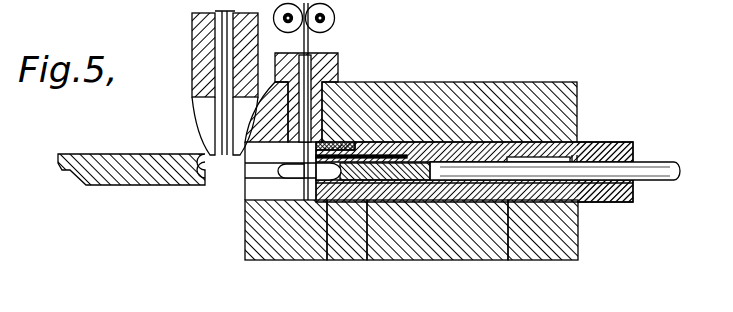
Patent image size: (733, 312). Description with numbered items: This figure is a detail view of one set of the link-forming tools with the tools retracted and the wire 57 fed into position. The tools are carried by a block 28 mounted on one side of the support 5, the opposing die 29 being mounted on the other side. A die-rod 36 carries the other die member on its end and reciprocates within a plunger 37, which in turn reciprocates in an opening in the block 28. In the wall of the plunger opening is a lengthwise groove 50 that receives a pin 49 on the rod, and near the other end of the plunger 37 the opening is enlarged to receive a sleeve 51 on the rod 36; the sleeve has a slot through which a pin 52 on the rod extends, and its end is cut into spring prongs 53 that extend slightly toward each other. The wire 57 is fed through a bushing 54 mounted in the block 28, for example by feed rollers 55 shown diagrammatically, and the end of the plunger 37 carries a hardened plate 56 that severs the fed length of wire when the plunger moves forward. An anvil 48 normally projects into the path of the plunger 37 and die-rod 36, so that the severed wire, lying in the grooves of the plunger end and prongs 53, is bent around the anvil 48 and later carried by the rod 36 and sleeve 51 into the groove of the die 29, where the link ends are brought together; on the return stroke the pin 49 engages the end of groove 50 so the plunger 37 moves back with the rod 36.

The support 5 is at (193, 58).
The block 28 is at (562, 250).
The die 29 is at (167, 188).
The die-rod 36 is at (570, 167).
The plunger 37 is at (508, 261).
The anvil 48 is at (293, 171).
The pin 49 is at (598, 148).
The groove 50 is at (557, 145).
The sleeve 51 is at (368, 261).
The pin 52 is at (400, 170).
The prongs 53 is at (300, 243).
The bushing 54 is at (317, 108).
The feed rollers 55 is at (336, 22).
The hardened plate 56 is at (350, 145).
The wire 57 is at (309, 40).